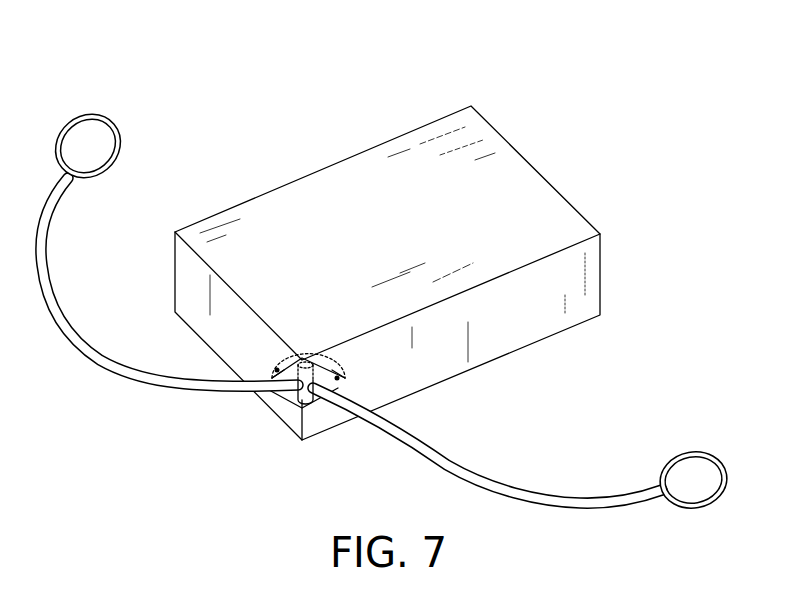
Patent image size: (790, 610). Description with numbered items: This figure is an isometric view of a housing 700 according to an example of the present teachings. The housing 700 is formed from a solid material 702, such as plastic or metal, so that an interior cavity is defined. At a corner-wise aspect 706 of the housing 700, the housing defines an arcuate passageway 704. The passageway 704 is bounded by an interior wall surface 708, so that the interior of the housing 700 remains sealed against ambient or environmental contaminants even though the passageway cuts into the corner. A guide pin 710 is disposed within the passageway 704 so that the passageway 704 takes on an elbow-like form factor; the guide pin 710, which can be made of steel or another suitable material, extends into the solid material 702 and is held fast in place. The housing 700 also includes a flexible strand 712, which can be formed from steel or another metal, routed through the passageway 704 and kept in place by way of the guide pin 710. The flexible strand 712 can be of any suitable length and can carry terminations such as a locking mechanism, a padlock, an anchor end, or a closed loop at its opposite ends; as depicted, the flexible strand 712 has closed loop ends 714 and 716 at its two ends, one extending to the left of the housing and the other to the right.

The housing 700 is at (576, 56).
The solid material 702 is at (478, 127).
The arcuate passageway 704 is at (340, 378).
The corner-wise aspect 706 is at (316, 330).
The interior wall surface 708 is at (275, 370).
The guide pin 710 is at (288, 398).
The flexible strand 712 is at (488, 480).
The closed loop end 714 is at (117, 157).
The closed loop end 716 is at (693, 452).